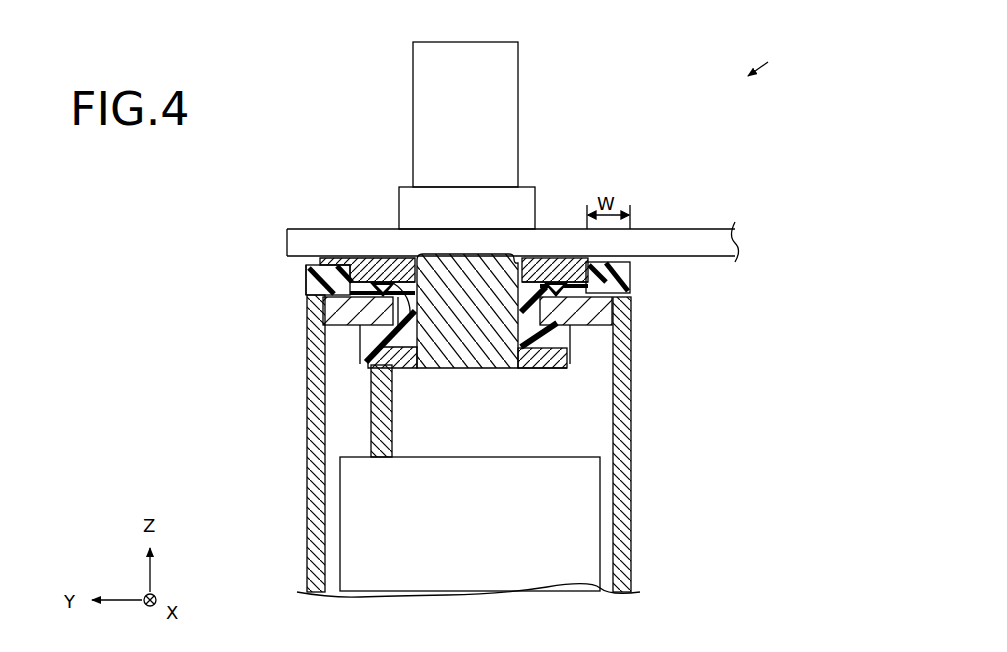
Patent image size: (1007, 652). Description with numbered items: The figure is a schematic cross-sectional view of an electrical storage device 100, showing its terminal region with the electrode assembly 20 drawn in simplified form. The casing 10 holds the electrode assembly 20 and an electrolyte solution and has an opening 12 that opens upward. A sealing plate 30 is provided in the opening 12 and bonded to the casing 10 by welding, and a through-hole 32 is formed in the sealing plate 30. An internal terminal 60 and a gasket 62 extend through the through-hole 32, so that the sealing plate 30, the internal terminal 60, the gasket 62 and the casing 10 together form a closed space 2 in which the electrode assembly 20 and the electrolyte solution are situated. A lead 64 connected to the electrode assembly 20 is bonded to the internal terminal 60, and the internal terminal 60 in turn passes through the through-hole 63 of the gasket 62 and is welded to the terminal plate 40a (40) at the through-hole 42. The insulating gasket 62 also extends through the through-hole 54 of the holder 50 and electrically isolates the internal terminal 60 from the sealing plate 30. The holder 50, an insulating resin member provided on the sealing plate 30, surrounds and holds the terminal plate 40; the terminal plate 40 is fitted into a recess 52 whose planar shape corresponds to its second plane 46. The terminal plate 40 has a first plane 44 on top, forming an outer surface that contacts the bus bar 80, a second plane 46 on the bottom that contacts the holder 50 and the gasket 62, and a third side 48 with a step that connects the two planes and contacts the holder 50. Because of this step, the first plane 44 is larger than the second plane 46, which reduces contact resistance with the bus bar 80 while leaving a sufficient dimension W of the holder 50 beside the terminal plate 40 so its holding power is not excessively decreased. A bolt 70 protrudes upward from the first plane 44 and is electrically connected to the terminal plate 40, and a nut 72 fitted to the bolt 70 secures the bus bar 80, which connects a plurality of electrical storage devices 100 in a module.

The closed space 2 is at (471, 432).
The casing 10 is at (317, 433).
The opening 12 is at (345, 322).
The electrode assembly 20 is at (360, 514).
The sealing plate 30 is at (592, 317).
The through-hole 32 is at (385, 283).
The terminal plate 40 is at (570, 203).
The terminal plate 40a is at (573, 262).
The through-hole 42 is at (515, 255).
The first plane 44 is at (366, 262).
The second plane 46 is at (308, 284).
The third side 48 is at (308, 265).
The holder 50 is at (600, 284).
The recess 52 is at (374, 258).
The through-hole 54 is at (552, 262).
The internal terminal 60 is at (522, 370).
The gasket 62 is at (552, 338).
The through-hole 63 is at (398, 346).
The lead 64 is at (381, 412).
The bolt 70 is at (437, 115).
The nut 72 is at (414, 207).
The bus bar 80 is at (684, 252).
The electrical storage device 100 is at (773, 61).